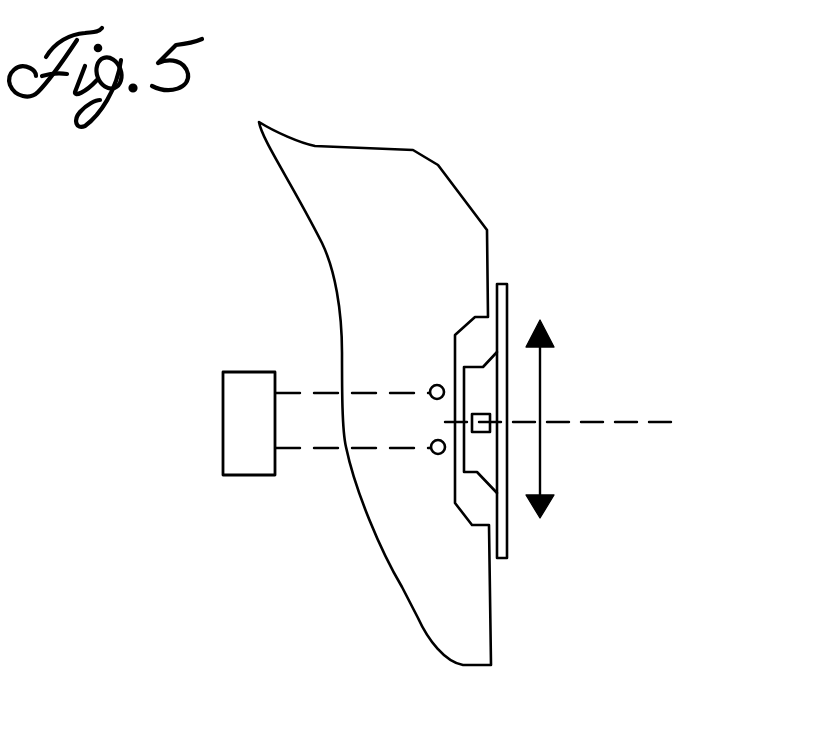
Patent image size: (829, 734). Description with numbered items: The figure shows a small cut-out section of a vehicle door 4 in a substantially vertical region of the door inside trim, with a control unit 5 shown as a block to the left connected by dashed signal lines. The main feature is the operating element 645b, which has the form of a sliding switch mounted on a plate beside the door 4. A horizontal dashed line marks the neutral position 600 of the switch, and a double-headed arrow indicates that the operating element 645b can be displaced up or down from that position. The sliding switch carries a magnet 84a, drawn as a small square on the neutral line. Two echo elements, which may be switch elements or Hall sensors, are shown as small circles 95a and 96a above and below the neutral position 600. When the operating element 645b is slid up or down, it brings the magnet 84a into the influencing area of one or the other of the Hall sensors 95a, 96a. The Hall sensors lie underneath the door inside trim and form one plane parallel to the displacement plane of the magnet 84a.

The vehicle body part 4 is at (393, 178).
The control unit 5 is at (238, 420).
The echo element 95a is at (437, 385).
The echo element 96a is at (437, 452).
The magnet 84a is at (487, 417).
The neutral position 600 is at (622, 421).
The operating element 645b is at (495, 453).